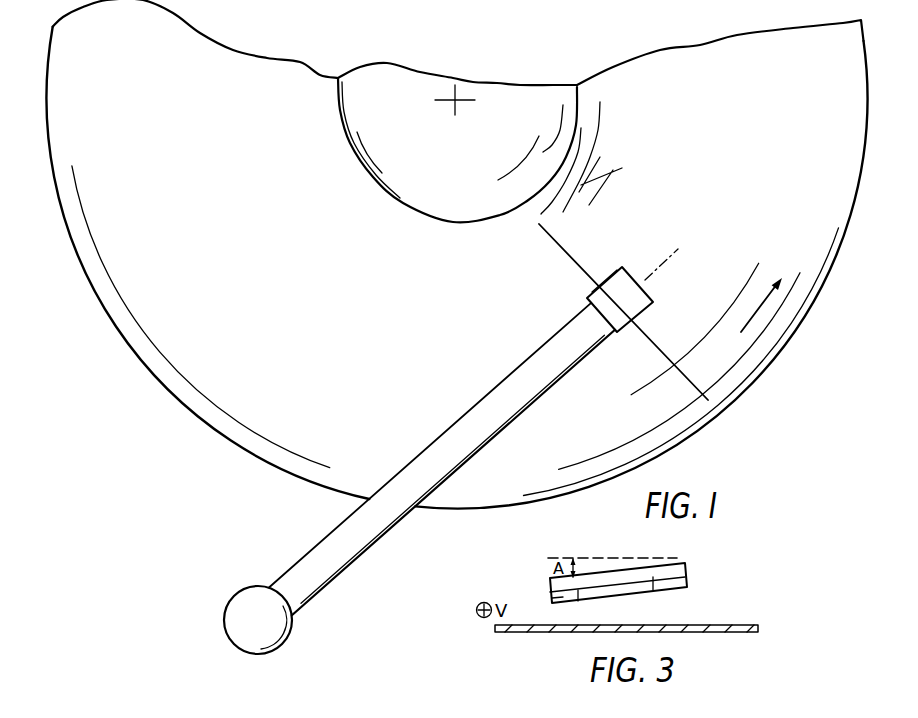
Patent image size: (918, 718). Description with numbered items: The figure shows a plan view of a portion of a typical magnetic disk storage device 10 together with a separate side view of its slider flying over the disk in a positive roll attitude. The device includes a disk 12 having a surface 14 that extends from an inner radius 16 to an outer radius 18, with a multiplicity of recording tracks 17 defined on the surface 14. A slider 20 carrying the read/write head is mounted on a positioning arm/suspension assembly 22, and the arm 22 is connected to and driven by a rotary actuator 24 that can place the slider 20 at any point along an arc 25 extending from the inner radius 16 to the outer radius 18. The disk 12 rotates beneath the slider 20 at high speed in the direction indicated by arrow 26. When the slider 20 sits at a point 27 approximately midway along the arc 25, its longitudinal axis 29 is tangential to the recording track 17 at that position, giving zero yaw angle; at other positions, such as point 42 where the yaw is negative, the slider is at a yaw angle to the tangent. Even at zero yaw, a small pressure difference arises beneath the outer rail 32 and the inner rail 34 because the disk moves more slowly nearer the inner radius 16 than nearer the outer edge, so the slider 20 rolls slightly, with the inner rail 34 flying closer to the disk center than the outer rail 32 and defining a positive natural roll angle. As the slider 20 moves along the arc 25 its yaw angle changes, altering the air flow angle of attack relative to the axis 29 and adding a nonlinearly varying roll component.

In FIG. 1, the disk storage device 10 is at (145, 424).
In FIG. 1, the disk 12 is at (746, 393).
In FIG. 1, the surface 14 is at (730, 127).
In FIG. 3, the surface 14 is at (737, 633).
In FIG. 1, the inner radius 16 is at (495, 81).
In FIG. 3, the inner radius 16 is at (494, 631).
In FIG. 1, the recording tracks 17 is at (612, 178).
In FIG. 1, the outer radius 18 is at (848, 214).
In FIG. 1, the slider 20 is at (620, 281).
In FIG. 3, the slider 20 is at (677, 561).
In FIG. 1, the positioning arm/suspension assembly 22 is at (387, 485).
In FIG. 1, the rotary actuator 24 is at (294, 631).
In FIG. 1, the arc 25 is at (548, 225).
In FIG. 1, the arrow 26 is at (751, 318).
In FIG. 1, the point 27 is at (620, 300).
In FIG. 1, the longitudinal axis 29 is at (677, 256).
In FIG. 3, the outer rail 32 is at (683, 588).
In FIG. 3, the inner rail 34 is at (553, 605).
In FIG. 1, the point 42 is at (686, 374).